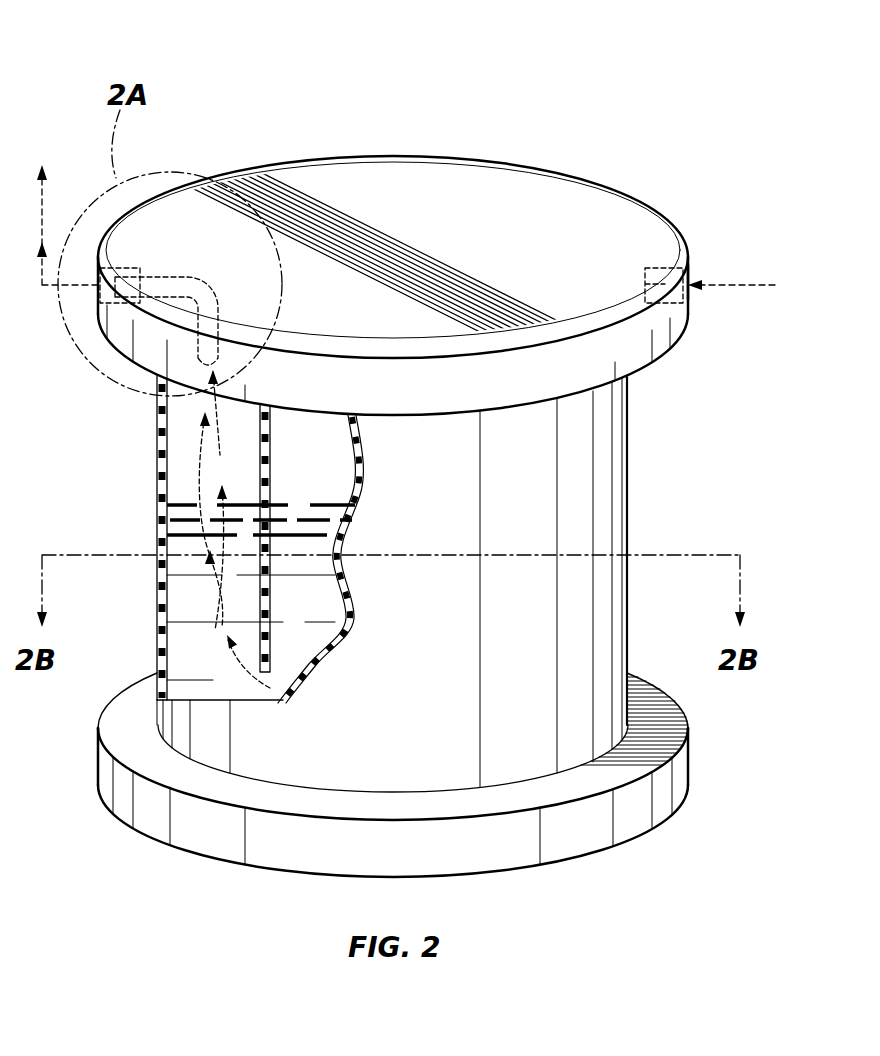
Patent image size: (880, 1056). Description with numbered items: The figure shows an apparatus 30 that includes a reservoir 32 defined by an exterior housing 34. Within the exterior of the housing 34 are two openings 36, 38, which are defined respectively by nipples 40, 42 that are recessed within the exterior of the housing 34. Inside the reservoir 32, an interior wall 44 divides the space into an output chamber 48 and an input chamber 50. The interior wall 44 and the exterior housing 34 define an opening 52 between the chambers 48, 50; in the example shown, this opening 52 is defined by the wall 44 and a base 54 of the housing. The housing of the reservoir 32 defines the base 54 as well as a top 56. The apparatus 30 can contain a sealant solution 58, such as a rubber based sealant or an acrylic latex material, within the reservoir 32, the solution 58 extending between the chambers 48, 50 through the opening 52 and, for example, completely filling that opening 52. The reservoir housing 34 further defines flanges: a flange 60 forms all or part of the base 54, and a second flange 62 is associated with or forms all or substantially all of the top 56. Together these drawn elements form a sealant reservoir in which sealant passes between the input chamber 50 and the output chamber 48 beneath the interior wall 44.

The apparatus 30 is at (627, 132).
The top 56 is at (477, 190).
The flange 62 is at (677, 337).
The opening 36 is at (684, 275).
The nipple 40 is at (660, 275).
The opening 38 is at (107, 297).
The nipple 42 is at (110, 267).
The exterior housing 34 is at (628, 493).
The output chamber 48 is at (182, 462).
The interior wall 44 is at (272, 477).
The reservoir 32 is at (323, 482).
The sealant solution 58 is at (182, 502).
The input chamber 50 is at (305, 620).
The opening 52 is at (243, 695).
The flange 60 is at (680, 767).
The base 54 is at (568, 888).